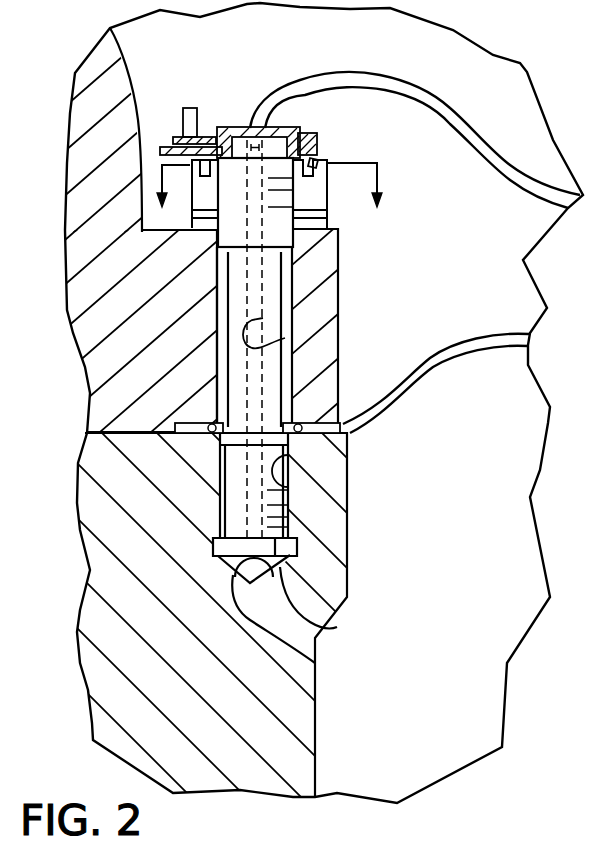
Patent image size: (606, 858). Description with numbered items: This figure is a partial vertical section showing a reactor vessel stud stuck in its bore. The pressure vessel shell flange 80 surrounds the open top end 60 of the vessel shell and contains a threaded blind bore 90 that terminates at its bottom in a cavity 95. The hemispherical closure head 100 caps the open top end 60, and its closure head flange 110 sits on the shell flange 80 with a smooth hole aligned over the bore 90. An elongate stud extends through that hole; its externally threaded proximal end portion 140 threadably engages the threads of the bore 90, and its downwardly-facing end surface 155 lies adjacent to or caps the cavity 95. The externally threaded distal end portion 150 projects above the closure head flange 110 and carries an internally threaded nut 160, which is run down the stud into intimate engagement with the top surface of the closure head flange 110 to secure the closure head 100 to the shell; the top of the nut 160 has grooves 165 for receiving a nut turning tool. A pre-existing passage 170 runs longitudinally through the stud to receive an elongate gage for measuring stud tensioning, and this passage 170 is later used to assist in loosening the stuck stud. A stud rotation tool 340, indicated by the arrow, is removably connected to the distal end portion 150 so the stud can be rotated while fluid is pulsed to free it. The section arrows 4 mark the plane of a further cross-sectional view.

The closure head 100 is at (118, 97).
The stud rotation tool 340 is at (240, 68).
The grooves 165 is at (310, 140).
The nut 160 is at (320, 157).
The section line 4- 4 is at (284, 157).
The distal end portion 150 is at (268, 215).
The closure head flange 110 is at (317, 297).
The passage 170 is at (285, 338).
The open top end 60 is at (356, 422).
The threaded blind bore 90 is at (289, 488).
The proximal end portion 140 is at (289, 524).
The pressure vessel shell flange 80 is at (327, 574).
The end surface 155 is at (337, 620).
The cavity 95 is at (314, 657).